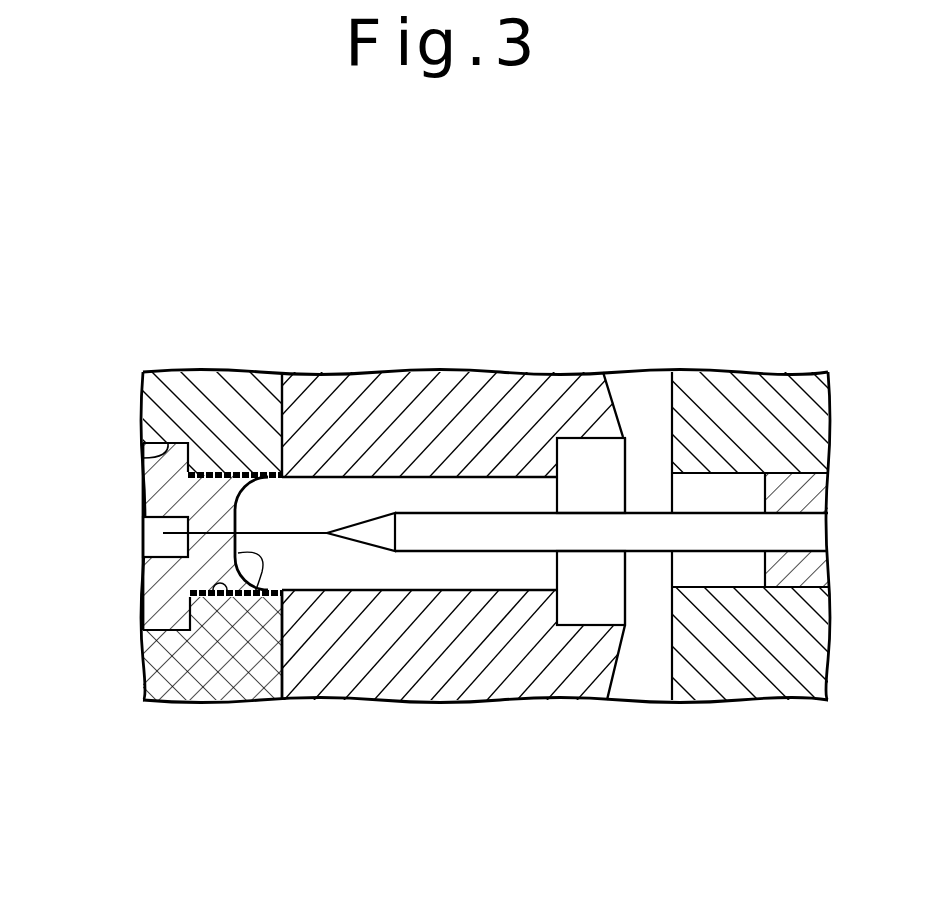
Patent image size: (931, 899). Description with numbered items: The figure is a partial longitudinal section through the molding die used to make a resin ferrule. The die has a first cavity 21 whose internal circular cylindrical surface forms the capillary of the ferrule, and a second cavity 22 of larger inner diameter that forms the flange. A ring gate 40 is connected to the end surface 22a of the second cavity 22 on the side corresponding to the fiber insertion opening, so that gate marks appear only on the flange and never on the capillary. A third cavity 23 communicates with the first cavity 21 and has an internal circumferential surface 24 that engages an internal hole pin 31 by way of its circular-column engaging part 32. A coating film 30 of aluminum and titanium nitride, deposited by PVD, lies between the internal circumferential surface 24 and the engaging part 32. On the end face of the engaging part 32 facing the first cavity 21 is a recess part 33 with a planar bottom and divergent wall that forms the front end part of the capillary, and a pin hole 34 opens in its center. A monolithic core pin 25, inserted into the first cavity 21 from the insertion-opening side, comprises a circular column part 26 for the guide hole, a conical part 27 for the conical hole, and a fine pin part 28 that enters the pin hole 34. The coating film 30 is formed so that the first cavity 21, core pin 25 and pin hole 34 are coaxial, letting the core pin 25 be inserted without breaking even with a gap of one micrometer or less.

The first cavity 21 is at (425, 492).
The second cavity 22 is at (578, 445).
The end surface of the second cavity 22a is at (626, 457).
The third cavity 23 is at (142, 458).
The internal circumferential surface 24 is at (190, 498).
The core pin 25 is at (636, 496).
The circular column part 26 is at (490, 538).
The conical part 27 is at (380, 533).
The fine pin part 28 is at (293, 537).
The coating film 30 is at (147, 523).
The internal hole pin 31 is at (130, 601).
The engaging part 32 is at (175, 665).
The recess part 33 is at (218, 592).
The pin hole 34 is at (222, 535).
The ring gate 40 is at (655, 608).